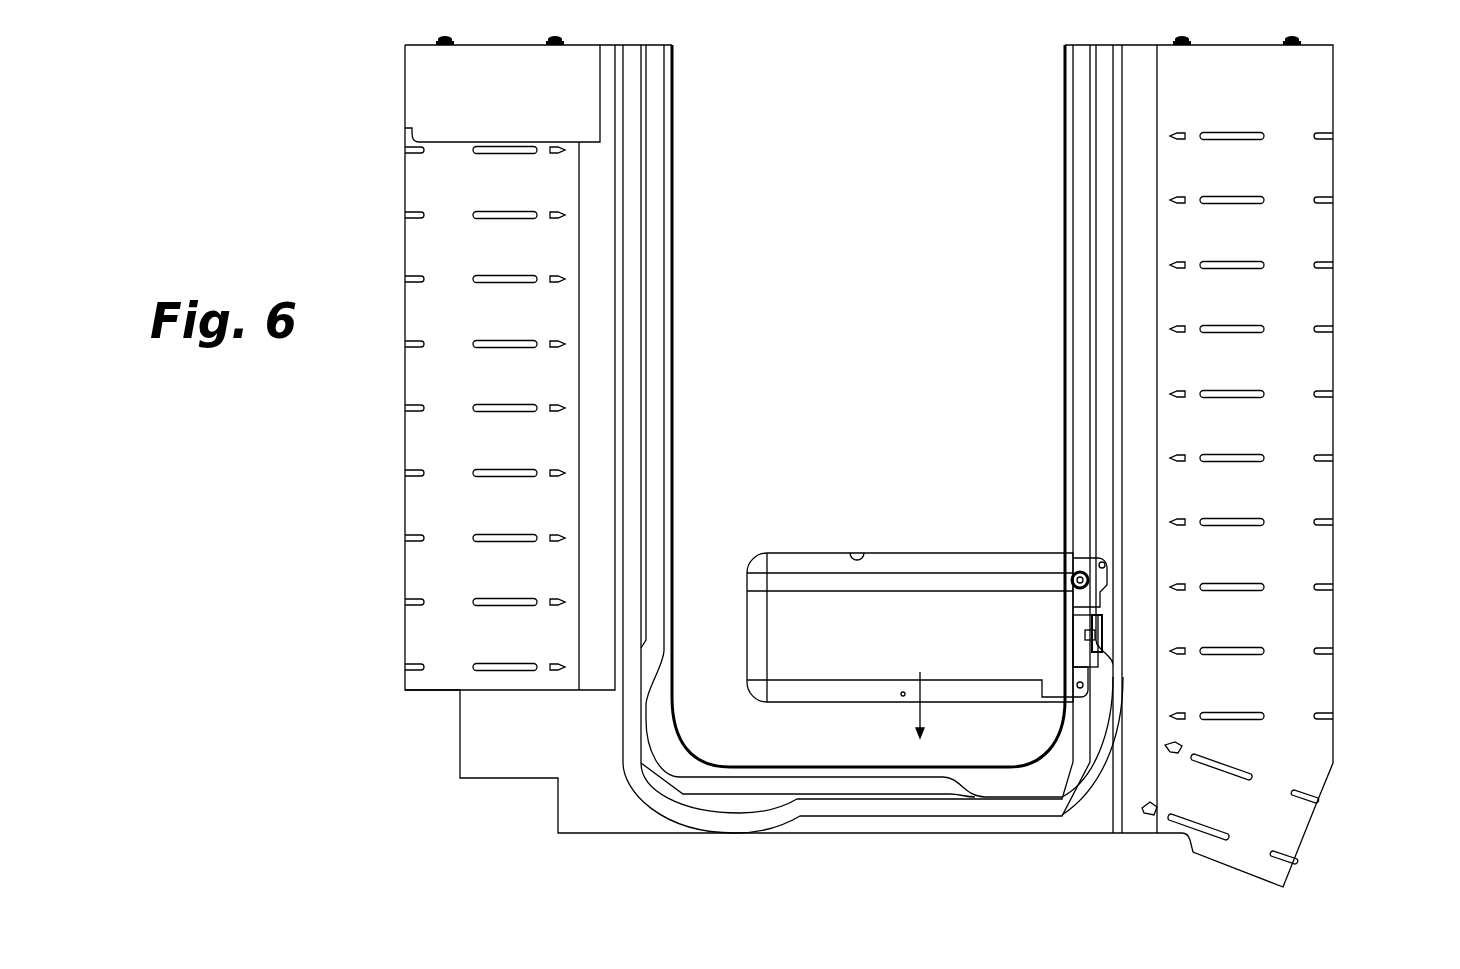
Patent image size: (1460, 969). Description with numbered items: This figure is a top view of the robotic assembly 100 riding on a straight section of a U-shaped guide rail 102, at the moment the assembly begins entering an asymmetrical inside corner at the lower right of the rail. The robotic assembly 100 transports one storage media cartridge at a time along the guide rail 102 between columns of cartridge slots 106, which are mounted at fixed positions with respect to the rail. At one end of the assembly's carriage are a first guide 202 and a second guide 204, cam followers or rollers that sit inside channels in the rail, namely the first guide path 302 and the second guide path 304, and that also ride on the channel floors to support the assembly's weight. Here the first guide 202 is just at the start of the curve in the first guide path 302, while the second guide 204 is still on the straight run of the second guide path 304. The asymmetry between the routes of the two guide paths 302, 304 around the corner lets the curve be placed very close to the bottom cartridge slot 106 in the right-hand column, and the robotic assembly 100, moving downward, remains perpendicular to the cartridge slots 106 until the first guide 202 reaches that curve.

The robotic assembly 100 is at (955, 514).
The guide rail 102 is at (885, 822).
The cartridge slots 106 is at (1300, 558).
The first guide 202 is at (1070, 670).
The second guide 204 is at (1094, 555).
The first guide path 302 is at (945, 790).
The second guide path 304 is at (1080, 800).